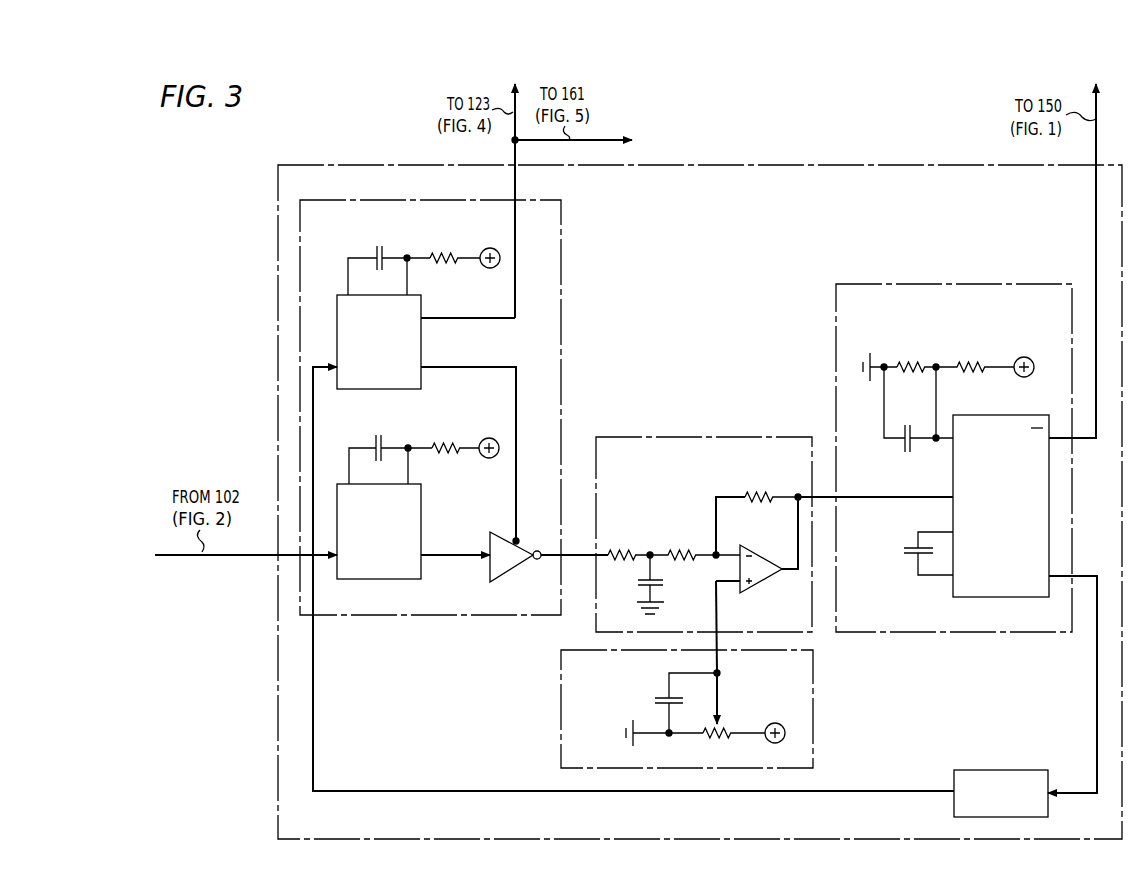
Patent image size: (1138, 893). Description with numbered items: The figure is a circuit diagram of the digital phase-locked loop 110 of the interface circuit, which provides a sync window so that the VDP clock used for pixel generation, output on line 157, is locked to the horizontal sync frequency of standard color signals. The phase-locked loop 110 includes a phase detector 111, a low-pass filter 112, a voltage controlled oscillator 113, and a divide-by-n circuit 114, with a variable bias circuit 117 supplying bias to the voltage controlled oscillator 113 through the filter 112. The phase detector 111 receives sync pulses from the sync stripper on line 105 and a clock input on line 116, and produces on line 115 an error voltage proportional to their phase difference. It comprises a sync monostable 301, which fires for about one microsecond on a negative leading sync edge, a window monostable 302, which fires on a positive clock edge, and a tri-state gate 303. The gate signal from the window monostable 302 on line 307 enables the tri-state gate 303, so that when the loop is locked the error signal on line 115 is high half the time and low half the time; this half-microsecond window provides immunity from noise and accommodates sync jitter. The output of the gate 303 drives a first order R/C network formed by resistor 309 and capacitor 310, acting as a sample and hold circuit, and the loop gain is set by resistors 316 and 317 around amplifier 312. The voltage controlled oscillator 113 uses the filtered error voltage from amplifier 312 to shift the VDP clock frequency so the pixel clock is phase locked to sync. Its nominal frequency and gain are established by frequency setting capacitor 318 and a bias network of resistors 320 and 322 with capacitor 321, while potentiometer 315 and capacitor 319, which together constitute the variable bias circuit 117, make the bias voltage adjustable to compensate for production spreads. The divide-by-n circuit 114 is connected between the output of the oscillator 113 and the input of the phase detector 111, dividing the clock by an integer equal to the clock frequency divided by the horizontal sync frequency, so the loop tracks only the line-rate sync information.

The line 105 is at (190, 558).
The phase-locked loop 110 is at (781, 165).
The phase detector 111 is at (561, 240).
The low-pass filter 112 is at (636, 436).
The voltage controlled oscillator 113 is at (836, 340).
The divide-by-n circuit 114 is at (1003, 768).
The line 115 is at (577, 552).
The line 116 is at (404, 790).
The variable bias circuit 117 is at (561, 742).
The line 157 is at (1096, 217).
The sync monostable 301 is at (421, 490).
The window monostable 302 is at (421, 303).
The tri-state gate 303 is at (500, 580).
The line 307 is at (516, 385).
The resistor 309 is at (622, 548).
The capacitor 310 is at (640, 584).
The amplifier 312 is at (752, 590).
The potentiometer 315 is at (708, 735).
The resistor 316 is at (680, 548).
The resistor 317 is at (752, 490).
The external capacitor 318 is at (913, 557).
The capacitor 319 is at (656, 697).
The resistor 320 is at (973, 360).
The capacitor 321 is at (912, 450).
The resistor 322 is at (909, 360).